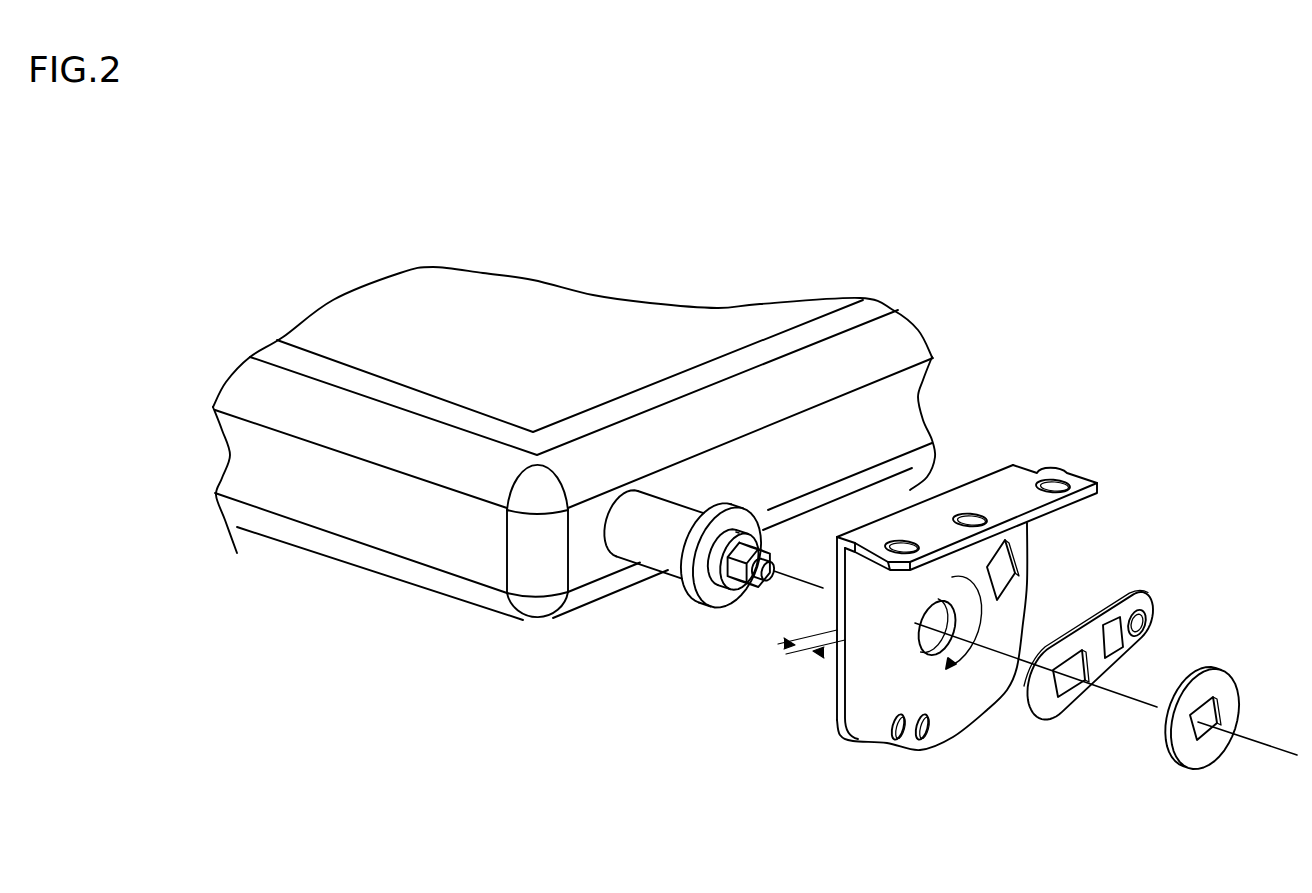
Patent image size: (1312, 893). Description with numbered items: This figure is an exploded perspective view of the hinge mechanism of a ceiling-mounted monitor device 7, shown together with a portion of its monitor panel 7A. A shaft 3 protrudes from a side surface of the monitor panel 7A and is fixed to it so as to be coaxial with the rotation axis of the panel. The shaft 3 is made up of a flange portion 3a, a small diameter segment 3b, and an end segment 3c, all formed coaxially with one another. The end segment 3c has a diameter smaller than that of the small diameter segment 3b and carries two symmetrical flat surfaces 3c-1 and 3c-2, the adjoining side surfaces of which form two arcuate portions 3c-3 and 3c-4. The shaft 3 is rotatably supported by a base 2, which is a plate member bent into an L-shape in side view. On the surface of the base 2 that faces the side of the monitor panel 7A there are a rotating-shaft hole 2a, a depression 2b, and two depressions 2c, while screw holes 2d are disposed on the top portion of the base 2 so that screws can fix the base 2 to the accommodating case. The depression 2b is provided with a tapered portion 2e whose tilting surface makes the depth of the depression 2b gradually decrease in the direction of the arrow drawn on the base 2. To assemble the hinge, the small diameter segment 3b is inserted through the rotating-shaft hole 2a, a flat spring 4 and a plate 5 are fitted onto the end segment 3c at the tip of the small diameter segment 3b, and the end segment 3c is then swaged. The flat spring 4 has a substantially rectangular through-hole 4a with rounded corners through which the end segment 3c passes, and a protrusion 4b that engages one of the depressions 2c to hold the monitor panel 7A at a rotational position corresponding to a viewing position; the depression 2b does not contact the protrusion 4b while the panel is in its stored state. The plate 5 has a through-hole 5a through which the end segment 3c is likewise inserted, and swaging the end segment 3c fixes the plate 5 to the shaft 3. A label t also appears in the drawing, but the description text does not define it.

The monitor panel 7A is at (488, 276).
The monitor device 7 is at (358, 577).
The shaft 3 is at (638, 545).
The flange portion 3a is at (688, 578).
The small diameter segment 3b is at (728, 575).
The end segment 3c is at (771, 441).
The flat surface 3c-1 is at (745, 545).
The flat surface 3c-2 is at (772, 548).
The arcuate portion 3c-3 is at (770, 560).
The arcuate portion 3c-4 is at (733, 578).
The base 2 is at (936, 624).
The rotating-shaft hole 2a is at (930, 640).
The depression 2b is at (1010, 562).
The depressions 2c is at (921, 742).
The screw holes 2d is at (1042, 483).
The tapered portion 2e is at (1008, 590).
The plate thickness t is at (796, 649).
The flat spring 4 is at (1124, 693).
The through-hole 4a is at (1078, 684).
The protrusion 4b is at (1148, 627).
The plate 5 is at (1220, 751).
The through-hole 5a is at (1208, 726).